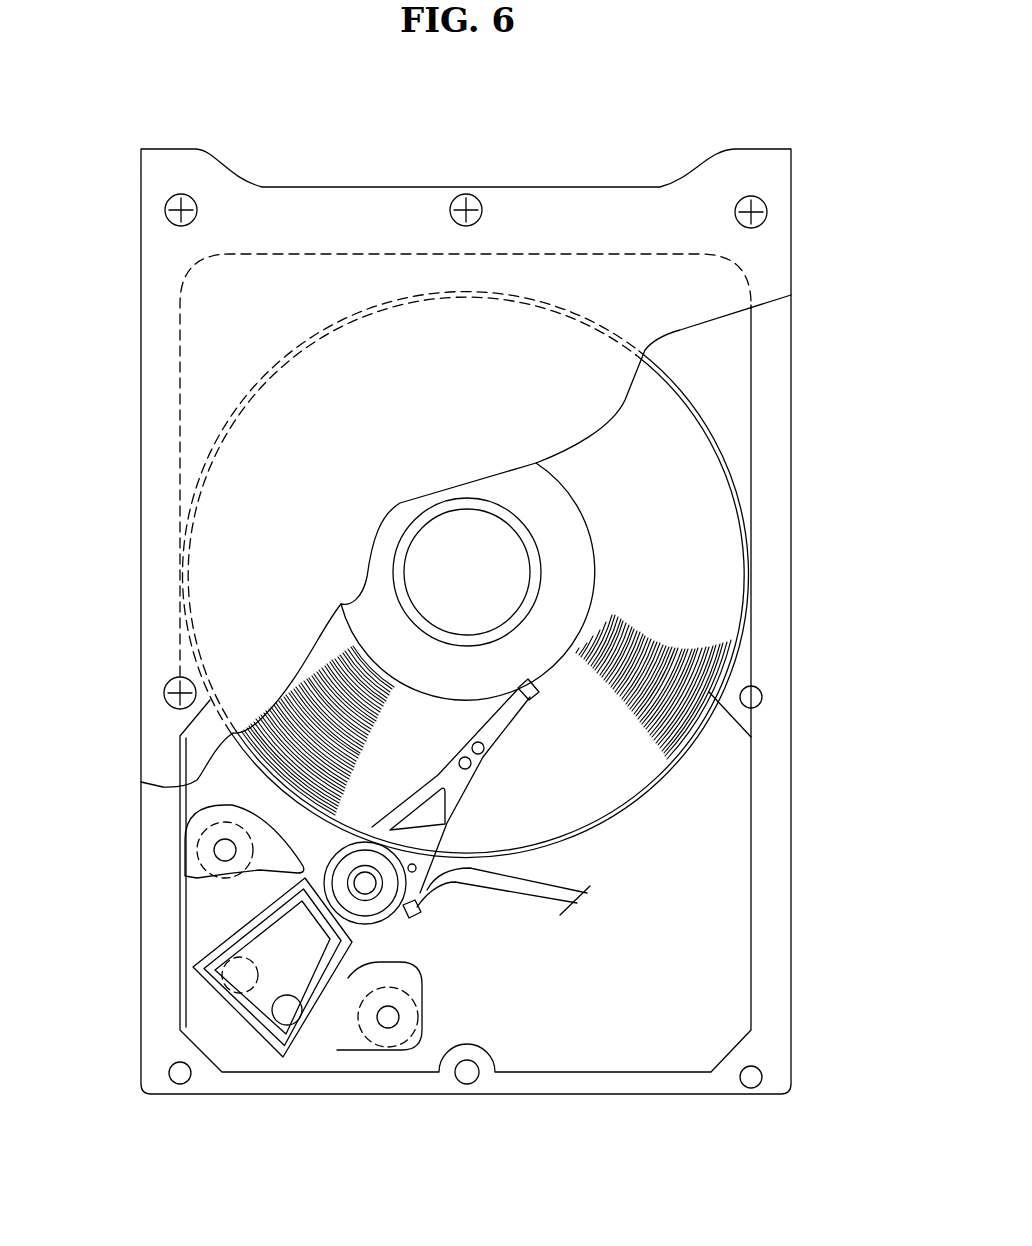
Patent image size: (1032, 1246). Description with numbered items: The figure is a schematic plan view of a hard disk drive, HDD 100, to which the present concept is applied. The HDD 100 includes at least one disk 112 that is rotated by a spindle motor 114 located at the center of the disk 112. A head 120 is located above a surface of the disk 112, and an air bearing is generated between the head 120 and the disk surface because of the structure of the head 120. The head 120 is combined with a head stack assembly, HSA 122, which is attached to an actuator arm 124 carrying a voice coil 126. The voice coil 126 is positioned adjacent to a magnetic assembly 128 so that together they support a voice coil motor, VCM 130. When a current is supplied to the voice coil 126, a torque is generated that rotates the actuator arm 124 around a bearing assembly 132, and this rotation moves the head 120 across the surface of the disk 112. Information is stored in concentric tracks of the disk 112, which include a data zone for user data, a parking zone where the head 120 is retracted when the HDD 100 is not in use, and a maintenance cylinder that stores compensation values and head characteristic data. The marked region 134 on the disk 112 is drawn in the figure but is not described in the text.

The HDD 100 is at (636, 128).
The disk 112 is at (712, 510).
The spindle motor 114 is at (445, 550).
The head 120 is at (528, 703).
The head stack assembly 122 is at (492, 738).
The actuator arm 124 is at (282, 895).
The voice coil 126 is at (213, 967).
The magnetic assembly 128 is at (223, 913).
The voice coil motor 130 is at (337, 1030).
The bearing assembly 132 is at (377, 893).
The scratch marks on disk 134 is at (330, 687).